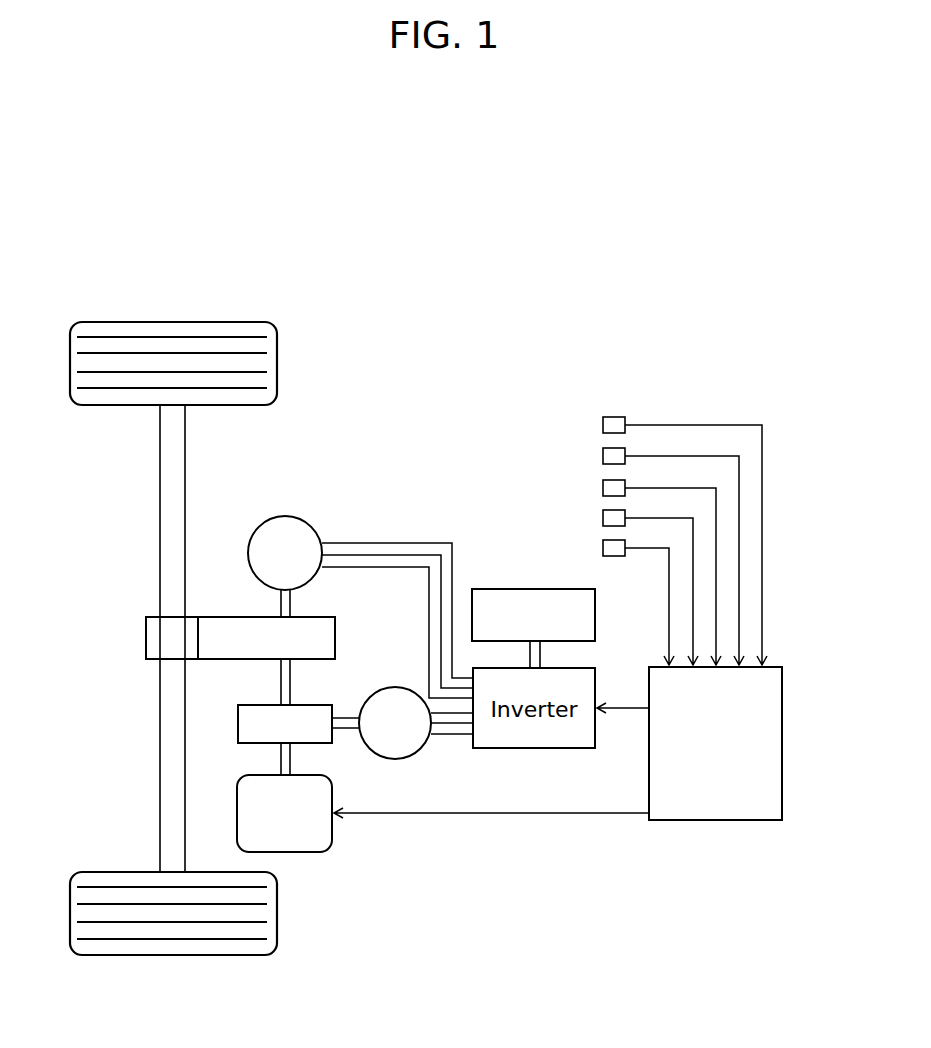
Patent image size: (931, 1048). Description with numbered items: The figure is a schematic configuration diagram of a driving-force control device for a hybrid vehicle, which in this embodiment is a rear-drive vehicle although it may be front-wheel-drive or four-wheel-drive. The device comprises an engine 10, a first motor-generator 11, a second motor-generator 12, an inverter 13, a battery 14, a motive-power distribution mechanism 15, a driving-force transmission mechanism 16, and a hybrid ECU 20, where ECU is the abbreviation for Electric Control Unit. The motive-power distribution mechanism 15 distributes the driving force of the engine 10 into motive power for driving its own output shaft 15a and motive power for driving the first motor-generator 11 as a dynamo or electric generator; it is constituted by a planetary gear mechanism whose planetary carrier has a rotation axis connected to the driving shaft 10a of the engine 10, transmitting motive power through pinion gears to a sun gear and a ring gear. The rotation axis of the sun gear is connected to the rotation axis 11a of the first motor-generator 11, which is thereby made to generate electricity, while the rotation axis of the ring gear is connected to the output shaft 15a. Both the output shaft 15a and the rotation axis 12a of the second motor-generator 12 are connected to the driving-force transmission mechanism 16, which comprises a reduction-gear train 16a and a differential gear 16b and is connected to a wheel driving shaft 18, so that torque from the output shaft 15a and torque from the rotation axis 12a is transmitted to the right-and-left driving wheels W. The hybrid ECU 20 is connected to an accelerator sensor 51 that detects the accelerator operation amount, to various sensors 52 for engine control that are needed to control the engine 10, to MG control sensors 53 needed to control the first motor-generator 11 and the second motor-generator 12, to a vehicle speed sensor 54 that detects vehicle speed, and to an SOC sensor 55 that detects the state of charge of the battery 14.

The wheels W is at (226, 322).
The engine 10 is at (278, 852).
The driving shaft 10a is at (281, 758).
The first motor-generator 11 is at (397, 687).
The rotation axis 11a is at (346, 731).
The second motor-generator 12 is at (283, 517).
The rotation axis 12a is at (292, 600).
The inverter 13 is at (550, 668).
The battery 14 is at (504, 589).
The motive-power distribution mechanism 15 is at (238, 723).
The output shaft 15a is at (281, 682).
The driving-force transmission mechanism 16 is at (335, 637).
The reduction-gear train 16a is at (217, 617).
The differential gear 16b is at (146, 638).
The wheel driving shaft 18 is at (160, 743).
The hybrid ECU 20 is at (782, 740).
The accelerator sensor 51 is at (603, 425).
The sensors for engine control 52 is at (603, 456).
The MG control sensors 53 is at (603, 488).
The vehicle speed sensor 54 is at (603, 518).
The SOC sensor 55 is at (603, 548).